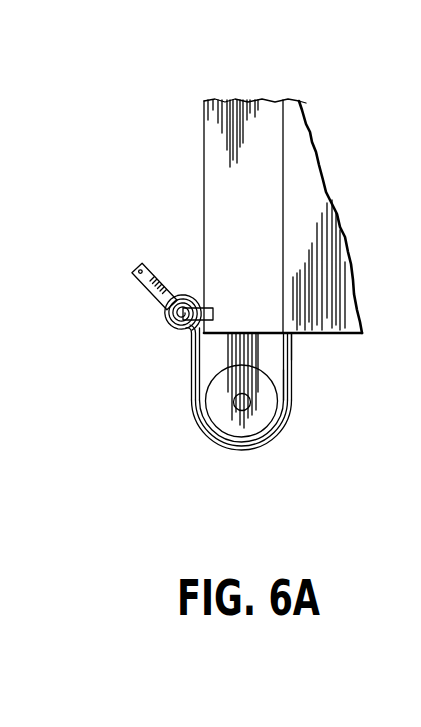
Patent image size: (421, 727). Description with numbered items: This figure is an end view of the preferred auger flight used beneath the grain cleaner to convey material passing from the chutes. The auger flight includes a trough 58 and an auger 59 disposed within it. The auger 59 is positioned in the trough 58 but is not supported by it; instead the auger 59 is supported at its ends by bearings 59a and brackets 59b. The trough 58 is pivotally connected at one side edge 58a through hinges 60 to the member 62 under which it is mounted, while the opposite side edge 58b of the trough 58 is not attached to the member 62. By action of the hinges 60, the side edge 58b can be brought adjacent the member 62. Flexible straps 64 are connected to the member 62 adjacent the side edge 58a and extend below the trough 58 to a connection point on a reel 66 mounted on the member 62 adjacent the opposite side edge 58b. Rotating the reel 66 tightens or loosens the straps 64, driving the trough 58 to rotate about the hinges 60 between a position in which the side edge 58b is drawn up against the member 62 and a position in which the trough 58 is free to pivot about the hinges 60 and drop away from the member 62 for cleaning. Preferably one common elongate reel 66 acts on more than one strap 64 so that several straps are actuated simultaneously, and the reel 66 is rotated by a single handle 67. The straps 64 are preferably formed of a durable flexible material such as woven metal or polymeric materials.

The member 62 is at (305, 184).
The hinges 60 is at (278, 340).
The trough 58 is at (290, 373).
The side edge 58a is at (292, 354).
The opposite side edge 58b is at (210, 404).
The auger 59 is at (220, 417).
The bearings 59a is at (246, 404).
The brackets 59b is at (238, 358).
The flexible straps 64 is at (214, 447).
The reel 66 is at (170, 327).
The handle 67 is at (157, 278).